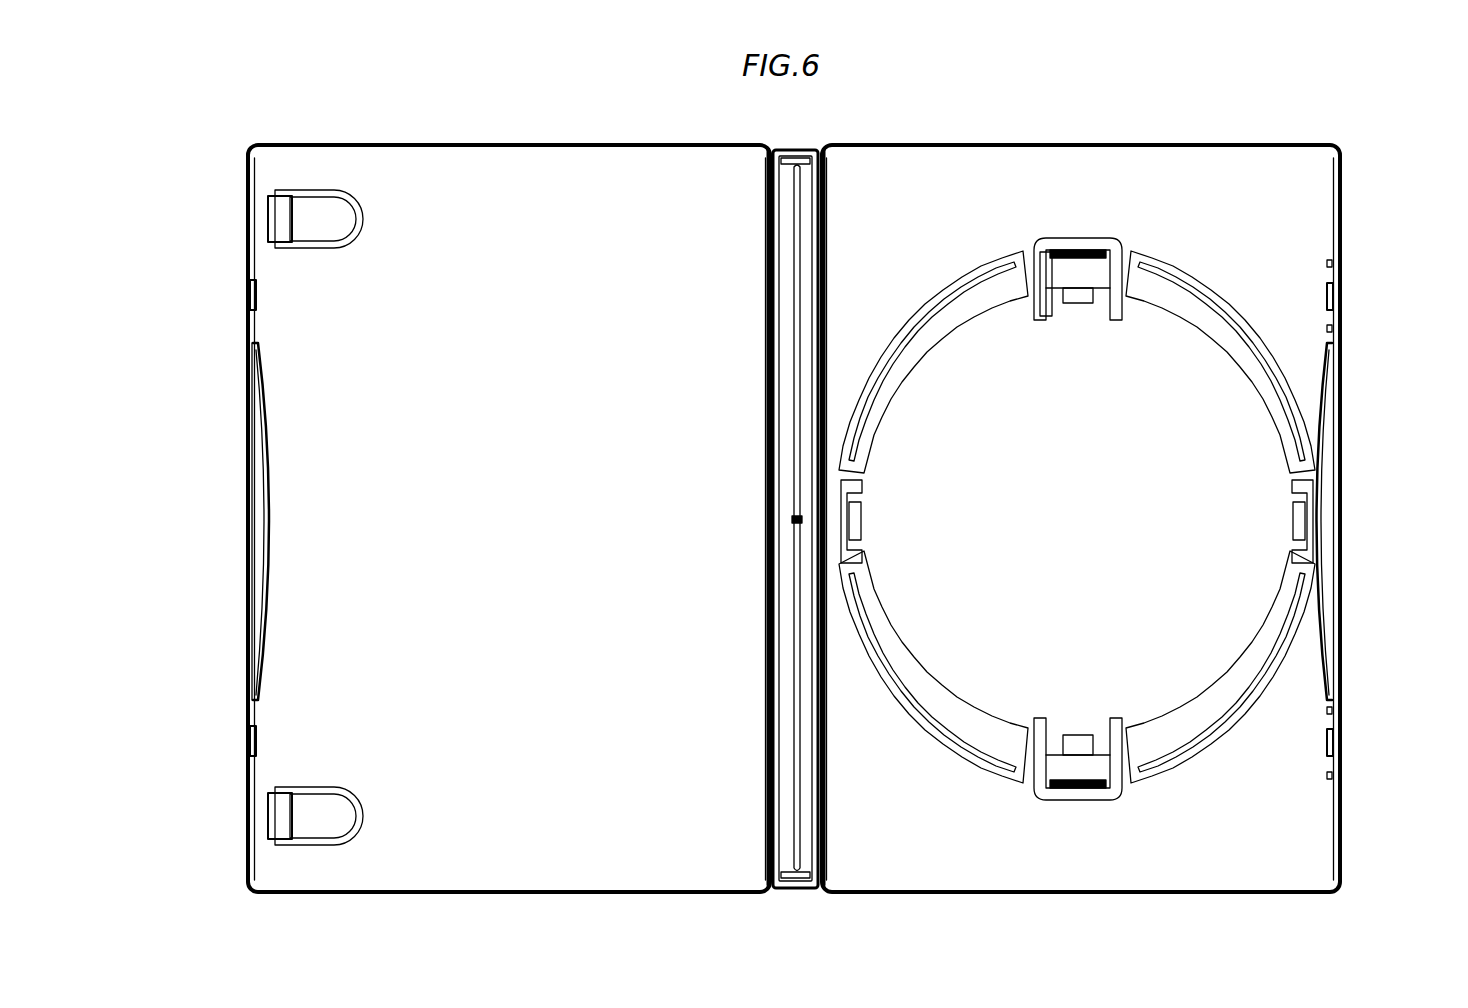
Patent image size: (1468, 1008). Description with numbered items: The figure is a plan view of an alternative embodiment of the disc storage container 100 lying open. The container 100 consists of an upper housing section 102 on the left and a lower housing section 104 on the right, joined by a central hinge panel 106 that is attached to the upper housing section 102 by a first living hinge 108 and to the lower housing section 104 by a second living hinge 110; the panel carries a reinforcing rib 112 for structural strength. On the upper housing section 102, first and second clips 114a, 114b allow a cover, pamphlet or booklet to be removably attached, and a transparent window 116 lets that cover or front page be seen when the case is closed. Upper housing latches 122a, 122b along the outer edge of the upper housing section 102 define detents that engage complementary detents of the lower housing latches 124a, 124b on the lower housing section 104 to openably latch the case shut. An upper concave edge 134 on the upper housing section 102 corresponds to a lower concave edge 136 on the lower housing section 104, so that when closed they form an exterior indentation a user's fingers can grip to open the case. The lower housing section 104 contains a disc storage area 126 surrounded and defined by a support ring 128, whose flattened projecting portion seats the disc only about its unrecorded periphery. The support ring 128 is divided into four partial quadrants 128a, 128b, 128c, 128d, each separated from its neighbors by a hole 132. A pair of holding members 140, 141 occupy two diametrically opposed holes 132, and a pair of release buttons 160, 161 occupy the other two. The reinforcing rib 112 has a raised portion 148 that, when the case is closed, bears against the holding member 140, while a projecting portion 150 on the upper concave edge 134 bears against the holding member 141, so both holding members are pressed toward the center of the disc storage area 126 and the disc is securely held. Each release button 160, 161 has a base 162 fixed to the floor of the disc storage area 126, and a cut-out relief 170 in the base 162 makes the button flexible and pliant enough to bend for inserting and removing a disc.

The disc storage container 100 is at (255, 118).
The upper housing section 102 is at (300, 280).
The lower housing section 104 is at (1205, 240).
The hinge panel 106 is at (797, 165).
The first living hinge 108 is at (768, 192).
The second living hinge 110 is at (826, 208).
The reinforcing rib 112 is at (797, 440).
The first clip 114a is at (292, 222).
The second clip 114b is at (292, 818).
The transparent window 116 is at (538, 533).
The upper housing latch 122a is at (252, 291).
The upper housing latch 122b is at (252, 740).
The lower housing latch 124a is at (1334, 297).
The lower housing latch 124b is at (1334, 741).
The disc storage area 126 is at (1098, 533).
The support ring 128 is at (1018, 250).
The partial quadrant 128a is at (990, 302).
The partial quadrant 128b is at (1217, 333).
The partial quadrant 128c is at (1175, 735).
The partial quadrant 128d is at (950, 718).
The hole 132 is at (1062, 260).
The upper concave edge 134 is at (262, 552).
The lower concave edge 136 is at (1322, 548).
The holding member 140 is at (845, 490).
The holding member 141 is at (1300, 518).
The raised portion 148 is at (796, 520).
The projecting portion 150 is at (270, 520).
The release button 160 is at (1078, 268).
The release button 161 is at (1075, 780).
The base 162 is at (1098, 300).
The cut-out relief 170 is at (1075, 745).